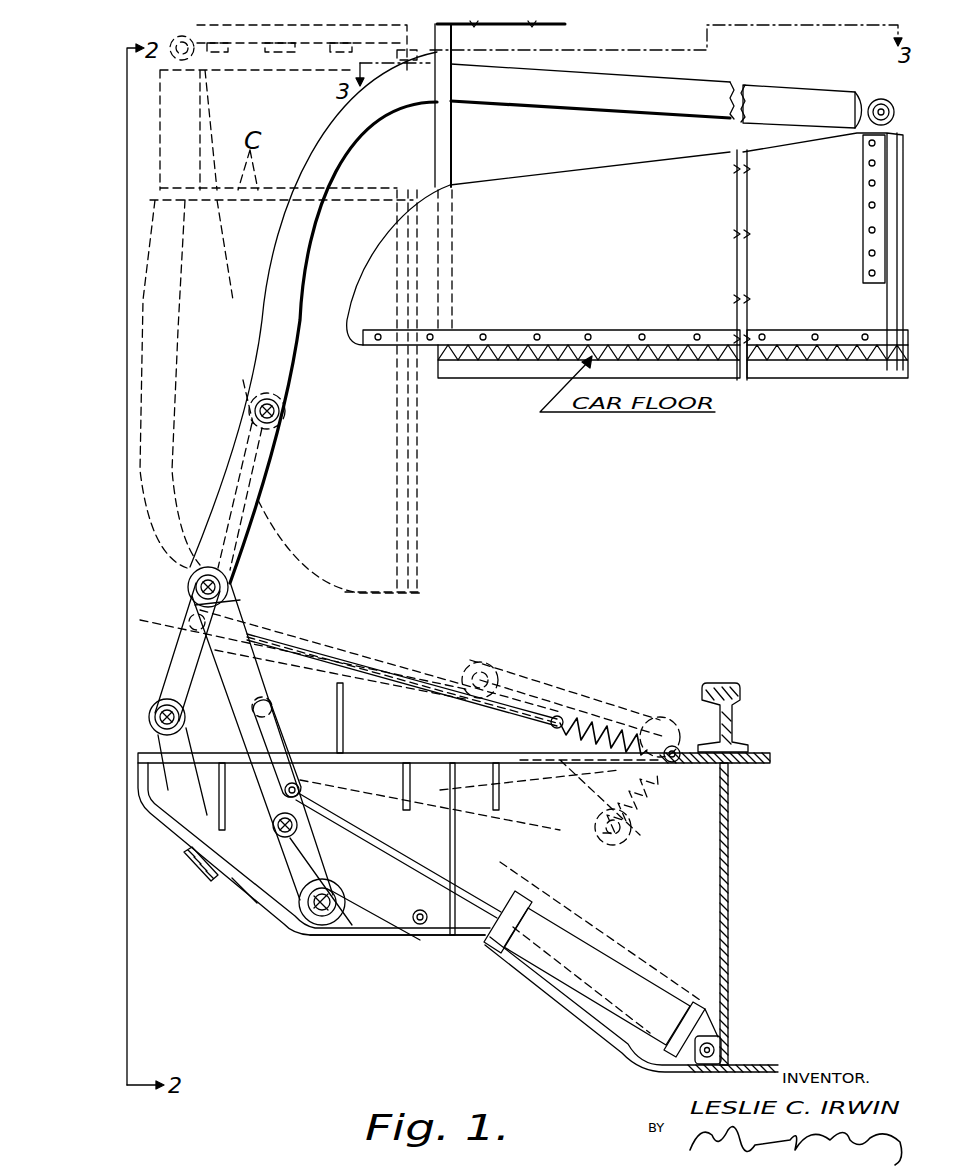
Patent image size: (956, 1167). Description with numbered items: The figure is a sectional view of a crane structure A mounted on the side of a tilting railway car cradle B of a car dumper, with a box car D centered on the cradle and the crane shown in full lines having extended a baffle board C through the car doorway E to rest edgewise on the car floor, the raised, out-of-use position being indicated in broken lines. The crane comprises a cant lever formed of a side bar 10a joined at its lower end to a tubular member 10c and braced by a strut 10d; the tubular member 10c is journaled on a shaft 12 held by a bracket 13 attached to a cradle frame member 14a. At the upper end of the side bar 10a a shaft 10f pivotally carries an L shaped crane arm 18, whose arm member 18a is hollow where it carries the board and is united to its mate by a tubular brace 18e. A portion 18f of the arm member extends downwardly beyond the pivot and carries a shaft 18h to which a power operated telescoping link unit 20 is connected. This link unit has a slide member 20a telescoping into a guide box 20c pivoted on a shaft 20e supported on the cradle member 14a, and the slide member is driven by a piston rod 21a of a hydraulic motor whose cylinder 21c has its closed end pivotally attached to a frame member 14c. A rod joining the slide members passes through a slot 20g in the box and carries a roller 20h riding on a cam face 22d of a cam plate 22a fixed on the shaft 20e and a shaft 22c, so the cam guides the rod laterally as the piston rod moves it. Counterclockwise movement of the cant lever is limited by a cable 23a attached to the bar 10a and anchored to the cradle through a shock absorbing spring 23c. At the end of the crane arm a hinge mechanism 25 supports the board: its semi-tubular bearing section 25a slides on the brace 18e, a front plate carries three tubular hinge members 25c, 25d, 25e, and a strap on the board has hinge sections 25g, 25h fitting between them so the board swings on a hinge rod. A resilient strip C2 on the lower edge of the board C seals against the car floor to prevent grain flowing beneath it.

The side bar 10a is at (228, 500).
The tubular member 10c is at (168, 764).
The strut 10d is at (182, 670).
The shaft 10f is at (281, 410).
The shaft 12 is at (192, 752).
The bracket 13 is at (180, 828).
The cradle frame member 14a is at (250, 888).
The frame member 14c is at (730, 877).
The crane arm 18 is at (586, 95).
The arm member 18a is at (738, 84).
The tubular brace 18e is at (852, 92).
The portion of arm member 18f is at (252, 515).
The shaft 18h is at (228, 585).
The telescoping link unit 20 is at (270, 645).
The slide member 20a is at (240, 616).
The guide box 20c is at (252, 704).
The shaft 20e is at (308, 928).
The slot 20g is at (272, 825).
The roller 20h is at (302, 789).
The piston rod 21a is at (392, 860).
The cylinder 21c is at (636, 990).
The cam plate 22a is at (378, 937).
The shaft 22c is at (423, 926).
The cam face 22d is at (382, 830).
The cable 23a is at (380, 662).
The shock absorbing spring 23c is at (592, 722).
The hinge mechanism 25 is at (870, 168).
The semi-tubular bearing section 25a is at (882, 99).
The tubular hinge member 25c is at (870, 148).
The tubular hinge member 25d is at (870, 213).
The tubular hinge member 25e is at (870, 276).
The tubular hinge section 25g is at (870, 190).
The tubular hinge section 25h is at (870, 240).
The crane structure A is at (306, 266).
The tilting railway car cradle B is at (588, 1034).
The baffle board C is at (737, 262).
The resilient strip C2 is at (560, 345).
The box car D is at (548, 36).
The car doorway E is at (451, 131).